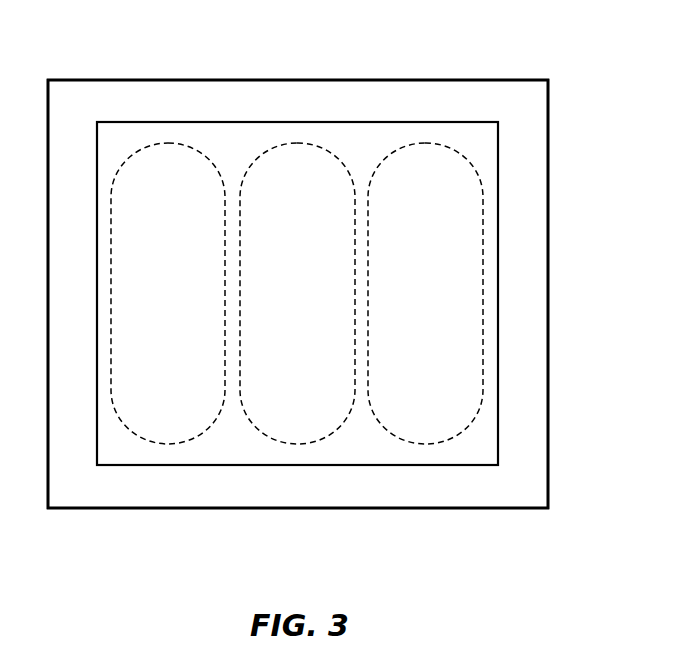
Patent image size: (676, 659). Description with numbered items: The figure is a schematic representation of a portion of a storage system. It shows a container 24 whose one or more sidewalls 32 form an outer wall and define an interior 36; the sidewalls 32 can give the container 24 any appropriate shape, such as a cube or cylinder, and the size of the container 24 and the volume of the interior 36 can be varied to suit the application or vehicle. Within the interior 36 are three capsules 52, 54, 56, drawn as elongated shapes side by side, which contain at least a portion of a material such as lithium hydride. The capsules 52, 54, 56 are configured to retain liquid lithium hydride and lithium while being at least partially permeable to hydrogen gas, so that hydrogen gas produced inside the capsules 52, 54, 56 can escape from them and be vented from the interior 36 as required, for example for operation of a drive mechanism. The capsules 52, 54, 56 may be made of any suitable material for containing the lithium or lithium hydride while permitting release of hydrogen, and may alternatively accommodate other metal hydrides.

The container 24 is at (307, 80).
The sidewalls 32 is at (238, 508).
The interior 36 is at (367, 453).
The capsule 52 is at (167, 143).
The capsule 54 is at (315, 145).
The capsule 56 is at (465, 157).